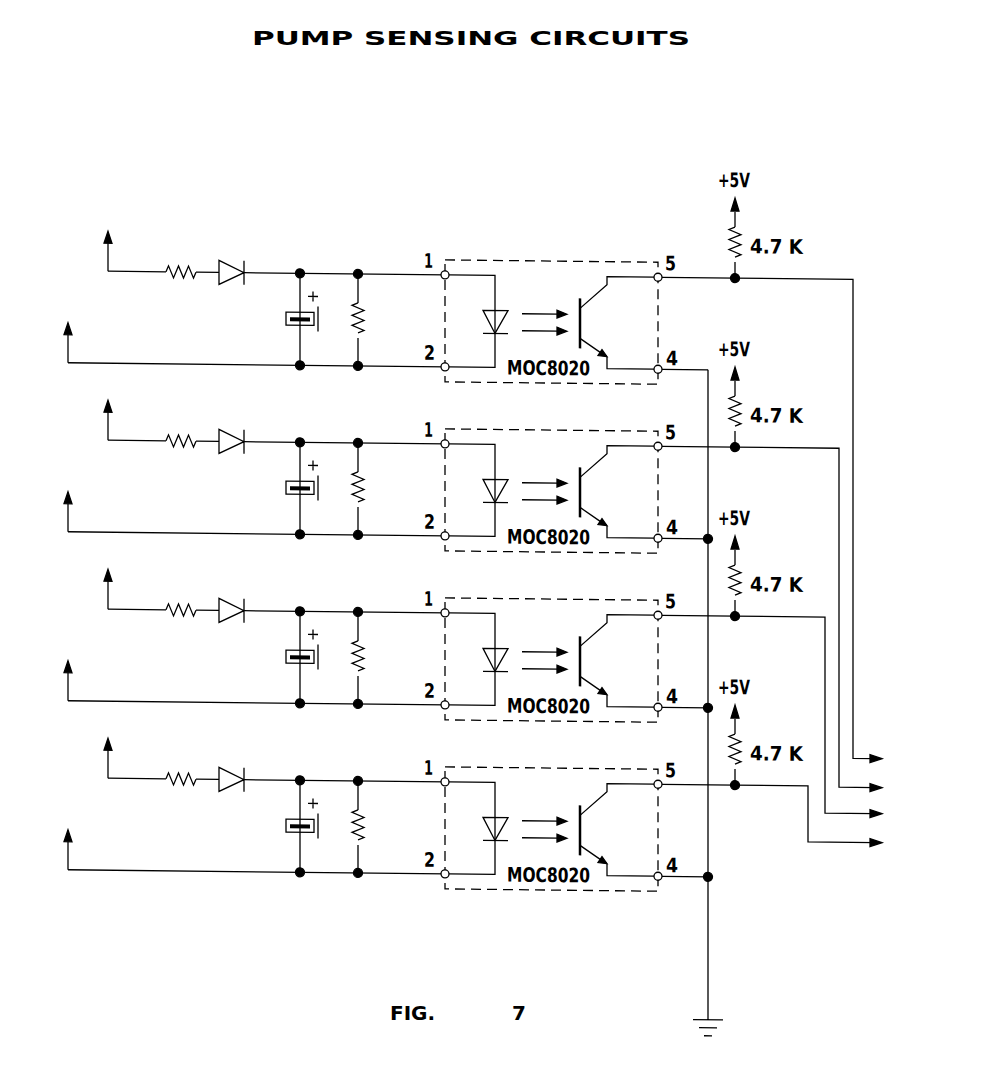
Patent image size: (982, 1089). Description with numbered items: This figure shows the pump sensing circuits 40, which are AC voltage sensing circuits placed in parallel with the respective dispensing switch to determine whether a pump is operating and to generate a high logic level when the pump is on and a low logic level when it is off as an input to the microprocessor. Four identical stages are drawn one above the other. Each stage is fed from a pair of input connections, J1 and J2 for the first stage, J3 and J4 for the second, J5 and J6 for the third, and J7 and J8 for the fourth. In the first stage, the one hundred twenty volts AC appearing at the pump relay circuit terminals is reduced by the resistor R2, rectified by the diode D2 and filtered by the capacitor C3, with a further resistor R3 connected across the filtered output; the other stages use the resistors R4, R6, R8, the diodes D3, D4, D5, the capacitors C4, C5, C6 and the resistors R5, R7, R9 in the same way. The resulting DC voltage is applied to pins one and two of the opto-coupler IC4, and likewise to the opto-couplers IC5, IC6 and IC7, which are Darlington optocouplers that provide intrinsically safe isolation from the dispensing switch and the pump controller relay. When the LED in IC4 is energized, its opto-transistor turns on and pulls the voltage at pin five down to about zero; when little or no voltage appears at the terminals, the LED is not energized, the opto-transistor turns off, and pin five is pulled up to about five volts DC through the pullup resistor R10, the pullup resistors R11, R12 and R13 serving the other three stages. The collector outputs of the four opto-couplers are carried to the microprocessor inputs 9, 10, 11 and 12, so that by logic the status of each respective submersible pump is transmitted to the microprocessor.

The sensing circuits 40 is at (416, 203).
The pump sensor input connector J1 is at (108, 237).
The pump sensor return connector J2 is at (70, 328).
The pump sensor input connector J3 is at (108, 406).
The pump sensor return connector J4 is at (70, 497).
The pump sensor input connector J5 is at (108, 575).
The pump sensor return connector J6 is at (70, 666).
The pump sensor input connector J7 is at (108, 744).
The pump sensor return connector J8 is at (70, 835).
The resistor R2 is at (179, 283).
The resistor R4 is at (179, 452).
The resistor R6 is at (179, 621).
The resistor R8 is at (179, 790).
The diode D2 is at (231, 259).
The diode D3 is at (231, 428).
The diode D4 is at (231, 597).
The diode D5 is at (231, 766).
The capacitor C3 is at (262, 318).
The capacitor C4 is at (262, 487).
The capacitor C5 is at (262, 656).
The capacitor C6 is at (262, 825).
The resistor R3 is at (388, 320).
The resistor R5 is at (388, 489).
The resistor R7 is at (388, 658).
The resistor R9 is at (388, 827).
The integrated circuit IC4 is at (551, 317).
The integrated circuit IC5 is at (551, 486).
The integrated circuit IC6 is at (551, 655).
The integrated circuit IC7 is at (551, 824).
The pullup resistor R10 is at (761, 225).
The resistor R11 is at (761, 394).
The resistor R12 is at (761, 563).
The resistor R13 is at (761, 732).
The microprocessor input 9 is at (808, 520).
The microprocessor input 10 is at (810, 619).
The microprocessor input 11 is at (810, 717).
The microprocessor input 12 is at (810, 816).